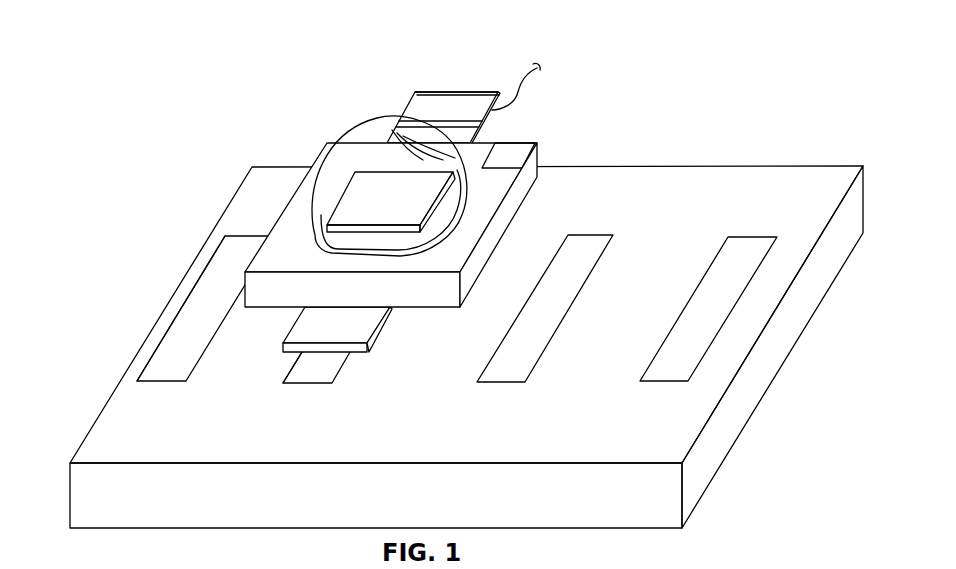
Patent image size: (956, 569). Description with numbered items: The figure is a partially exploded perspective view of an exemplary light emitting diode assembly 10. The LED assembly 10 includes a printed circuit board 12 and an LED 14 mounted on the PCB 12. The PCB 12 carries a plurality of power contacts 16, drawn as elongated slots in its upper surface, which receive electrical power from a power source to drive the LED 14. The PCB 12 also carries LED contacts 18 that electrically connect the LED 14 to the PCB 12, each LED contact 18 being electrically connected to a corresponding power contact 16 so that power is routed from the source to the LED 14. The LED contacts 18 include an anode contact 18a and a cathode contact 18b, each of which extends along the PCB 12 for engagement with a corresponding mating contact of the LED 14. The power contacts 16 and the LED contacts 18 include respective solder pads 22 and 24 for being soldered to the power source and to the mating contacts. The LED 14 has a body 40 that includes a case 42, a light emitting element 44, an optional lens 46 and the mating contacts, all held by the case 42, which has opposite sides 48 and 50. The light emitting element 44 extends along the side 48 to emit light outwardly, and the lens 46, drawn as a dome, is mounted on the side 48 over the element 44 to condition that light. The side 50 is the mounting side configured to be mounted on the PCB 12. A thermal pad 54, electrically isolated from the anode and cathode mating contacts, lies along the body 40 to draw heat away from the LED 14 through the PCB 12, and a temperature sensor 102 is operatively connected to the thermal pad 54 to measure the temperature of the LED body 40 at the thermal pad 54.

The light emitting diode assembly 10 is at (448, 277).
The printed circuit board 12 is at (448, 347).
The LED 14 is at (540, 111).
The power contacts 16 is at (197, 317).
The LED contacts 18 is at (328, 385).
The anode contact 18a is at (294, 377).
The cathode contact 18b is at (515, 373).
The solder pad 22 is at (187, 303).
The solder pad 24 is at (105, 440).
The body 40 is at (429, 237).
The case 42 is at (461, 307).
The light emitting element 44 is at (363, 210).
The lens 46 is at (370, 122).
The side 48 is at (263, 262).
The side 50 is at (398, 314).
The thermal pad 54 is at (463, 92).
The temperature sensor 102 is at (442, 85).